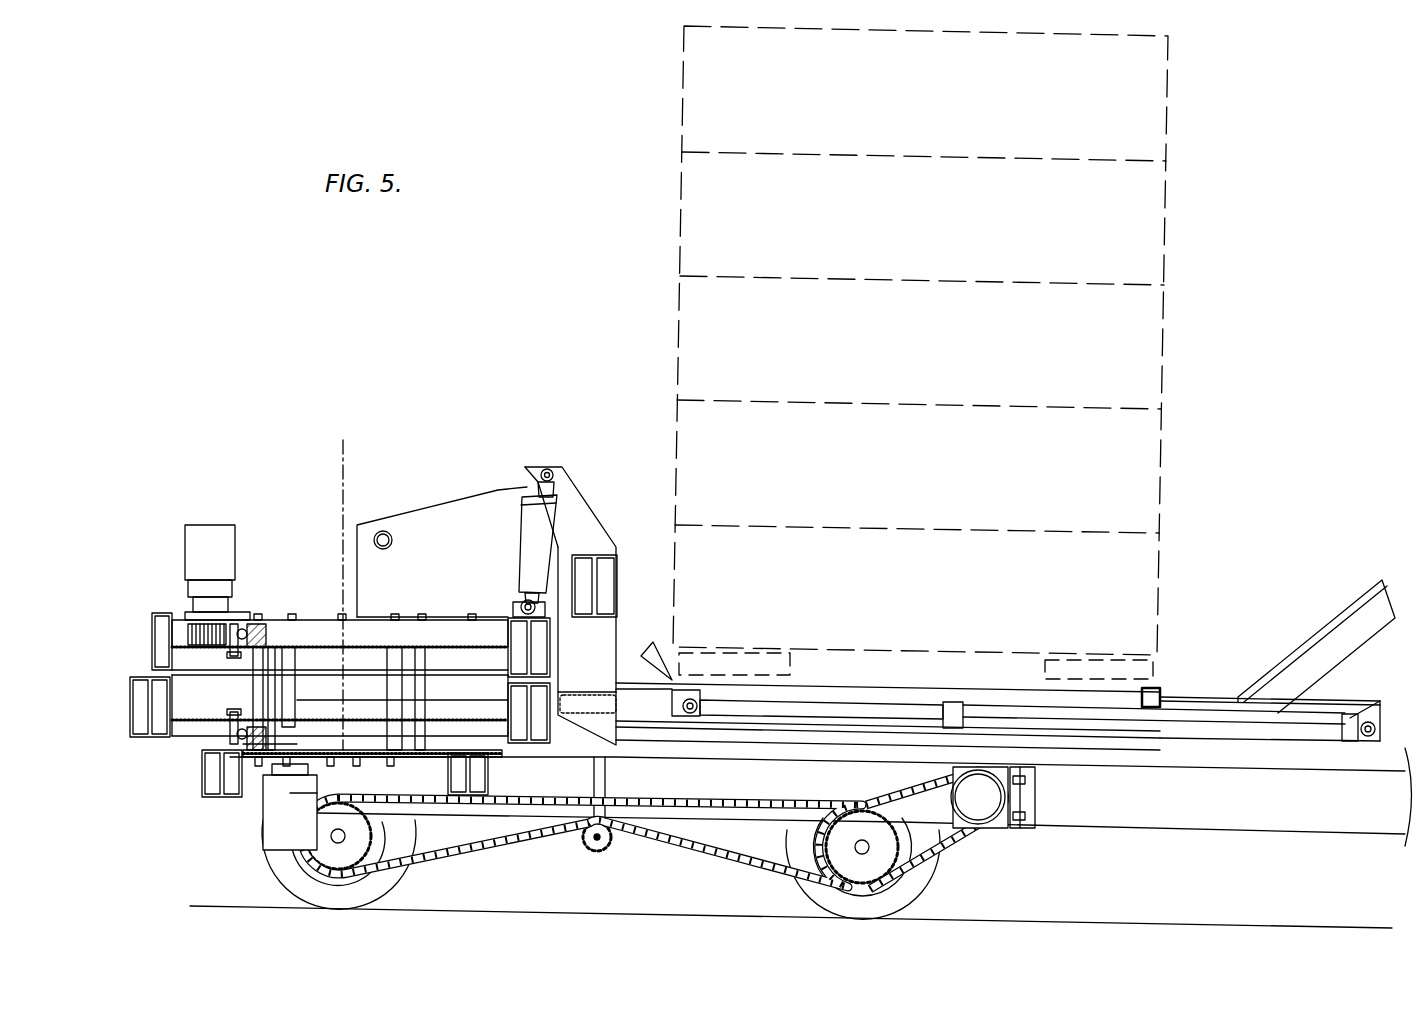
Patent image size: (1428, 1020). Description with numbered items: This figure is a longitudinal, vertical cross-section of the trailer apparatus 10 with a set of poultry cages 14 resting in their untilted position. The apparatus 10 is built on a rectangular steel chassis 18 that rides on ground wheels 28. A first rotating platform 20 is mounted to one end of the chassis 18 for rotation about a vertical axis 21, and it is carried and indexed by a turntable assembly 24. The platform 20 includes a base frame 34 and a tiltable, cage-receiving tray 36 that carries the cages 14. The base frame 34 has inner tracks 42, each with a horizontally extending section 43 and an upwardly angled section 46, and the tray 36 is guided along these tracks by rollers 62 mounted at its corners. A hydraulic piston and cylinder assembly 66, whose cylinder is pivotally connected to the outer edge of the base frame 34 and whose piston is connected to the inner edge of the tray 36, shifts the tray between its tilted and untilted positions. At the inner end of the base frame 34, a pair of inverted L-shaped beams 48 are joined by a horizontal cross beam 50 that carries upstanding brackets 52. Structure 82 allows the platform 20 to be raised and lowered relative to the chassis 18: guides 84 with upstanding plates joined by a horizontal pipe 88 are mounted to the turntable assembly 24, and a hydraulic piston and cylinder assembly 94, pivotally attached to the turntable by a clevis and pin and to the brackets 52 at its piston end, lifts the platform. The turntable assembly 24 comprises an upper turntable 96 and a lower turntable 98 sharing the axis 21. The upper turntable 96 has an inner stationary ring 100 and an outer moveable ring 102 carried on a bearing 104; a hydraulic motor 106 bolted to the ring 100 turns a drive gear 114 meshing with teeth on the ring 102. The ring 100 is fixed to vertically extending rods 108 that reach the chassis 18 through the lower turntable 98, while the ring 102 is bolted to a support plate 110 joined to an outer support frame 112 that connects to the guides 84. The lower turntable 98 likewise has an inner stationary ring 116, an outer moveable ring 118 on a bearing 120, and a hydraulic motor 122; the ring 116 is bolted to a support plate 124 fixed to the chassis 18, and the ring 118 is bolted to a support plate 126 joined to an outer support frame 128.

The trailer apparatus 10 is at (470, 292).
The set of poultry cages 14 is at (1153, 268).
The chassis 18 is at (1110, 820).
The first rotating platform 20 is at (1268, 638).
The vertical axis 21 is at (343, 462).
The turntable assembly 24 is at (759, 647).
The ground wheels 28 is at (388, 880).
The base frame 34 is at (1363, 750).
The cage-receiving tray 36 is at (995, 705).
The inner tracks 42 is at (1245, 692).
The horizontally extending section 43 is at (1183, 698).
The upwardly angled section 46 is at (1385, 590).
The L-shaped beams 48 is at (605, 633).
The cross beam 50 is at (614, 570).
The brackets 52 is at (590, 526).
The rollers 62 is at (688, 722).
The hydraulic piston and cylinder assembly 66 is at (1020, 700).
The raising and lowering structure 82 is at (508, 568).
The guides 84 is at (422, 492).
The horizontally extending pipe 88 is at (382, 530).
The hydraulic piston and cylinder assembly 94 is at (560, 497).
The first upper turntable 96 is at (150, 637).
The second lower turntable 98 is at (135, 745).
The inner stationary ring 100 is at (320, 625).
The outer moveable ring 102 is at (440, 640).
The bearing 104 is at (250, 626).
The hydraulic motor 106 is at (210, 537).
The vertically extending rods 108 is at (347, 656).
The support plate 110 is at (470, 642).
The outer support frame 112 is at (160, 614).
The drive gear 114 is at (190, 625).
The inner stationary ring 116 is at (385, 758).
The outer moveable ring 118 is at (475, 757).
The bearing 120 is at (240, 714).
The hydraulic motor 122 is at (275, 825).
The support plate 124 is at (324, 758).
The support plate 126 is at (502, 722).
The outer support frame 128 is at (530, 745).